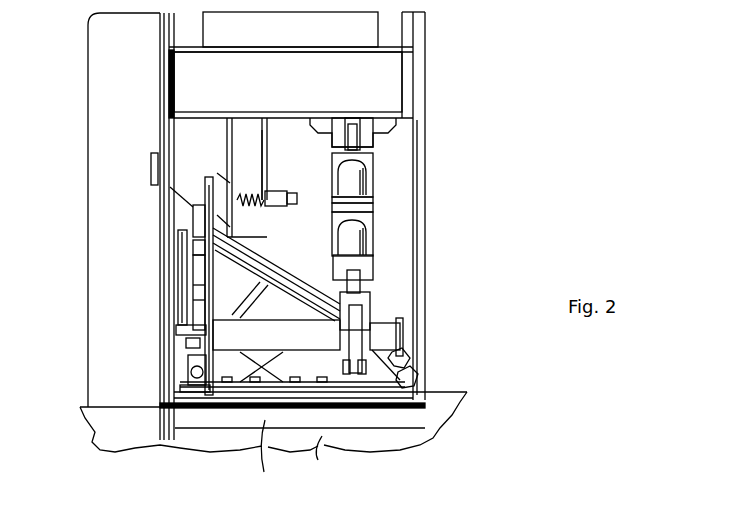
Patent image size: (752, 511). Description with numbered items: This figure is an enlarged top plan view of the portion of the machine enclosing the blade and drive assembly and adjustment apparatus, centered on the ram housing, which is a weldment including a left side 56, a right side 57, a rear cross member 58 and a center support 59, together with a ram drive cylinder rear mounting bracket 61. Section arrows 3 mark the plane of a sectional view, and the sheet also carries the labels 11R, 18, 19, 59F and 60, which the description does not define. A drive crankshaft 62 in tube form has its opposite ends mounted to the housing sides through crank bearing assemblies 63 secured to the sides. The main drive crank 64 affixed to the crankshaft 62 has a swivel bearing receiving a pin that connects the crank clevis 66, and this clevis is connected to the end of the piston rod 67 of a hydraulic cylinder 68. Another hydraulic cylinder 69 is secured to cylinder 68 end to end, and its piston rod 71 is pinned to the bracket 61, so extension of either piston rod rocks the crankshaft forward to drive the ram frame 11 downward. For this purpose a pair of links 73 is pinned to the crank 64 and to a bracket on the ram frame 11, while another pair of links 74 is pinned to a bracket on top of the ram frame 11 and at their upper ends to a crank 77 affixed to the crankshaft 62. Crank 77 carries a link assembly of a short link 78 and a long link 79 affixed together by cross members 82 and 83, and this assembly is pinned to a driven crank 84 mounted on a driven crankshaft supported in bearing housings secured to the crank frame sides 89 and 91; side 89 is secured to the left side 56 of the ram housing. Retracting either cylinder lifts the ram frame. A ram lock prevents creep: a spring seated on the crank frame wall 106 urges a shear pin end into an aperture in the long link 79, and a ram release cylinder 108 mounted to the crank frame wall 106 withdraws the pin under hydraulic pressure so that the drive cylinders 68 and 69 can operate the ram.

The section line 3 is at (167, 163).
The ram frame 11 is at (328, 383).
The diagonal brace 11R is at (281, 262).
The ground 18 is at (320, 458).
The ground surface 19 is at (264, 472).
The left side 56 is at (160, 210).
The right side 57 is at (422, 206).
The rear cross member 58 is at (338, 117).
The center support 59 is at (332, 193).
The cross strut 59F is at (244, 300).
The floor slab 60 is at (415, 400).
The ram drive cylinder rear mounting bracket 61 is at (370, 130).
The crankshaft 62 is at (290, 348).
The crank bearing assemblies 63 is at (188, 343).
The main drive crank 64 is at (385, 325).
The crank clevis 66 is at (366, 307).
The piston rod 67 is at (358, 283).
The hydraulic cylinder 68 is at (368, 256).
The hydraulic cylinder 69 is at (358, 183).
The piston rod 71 is at (355, 147).
The links 73 is at (352, 374).
The links 74 is at (208, 365).
The crank 77 is at (178, 398).
The short link 78 is at (195, 268).
The long link 79 is at (210, 286).
The cross member 82 is at (200, 300).
The cross member 83 is at (202, 252).
The driven crank 84 is at (203, 217).
The crank frame side 89 is at (172, 133).
The crank frame side 91 is at (234, 150).
The crank frame wall 106 is at (266, 166).
The ram release cylinder 108 is at (274, 208).